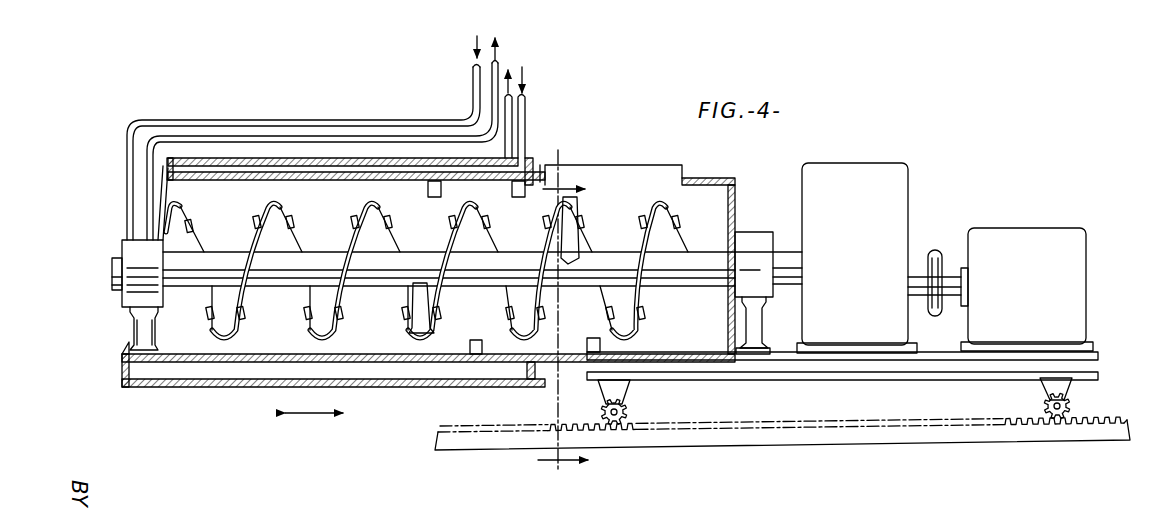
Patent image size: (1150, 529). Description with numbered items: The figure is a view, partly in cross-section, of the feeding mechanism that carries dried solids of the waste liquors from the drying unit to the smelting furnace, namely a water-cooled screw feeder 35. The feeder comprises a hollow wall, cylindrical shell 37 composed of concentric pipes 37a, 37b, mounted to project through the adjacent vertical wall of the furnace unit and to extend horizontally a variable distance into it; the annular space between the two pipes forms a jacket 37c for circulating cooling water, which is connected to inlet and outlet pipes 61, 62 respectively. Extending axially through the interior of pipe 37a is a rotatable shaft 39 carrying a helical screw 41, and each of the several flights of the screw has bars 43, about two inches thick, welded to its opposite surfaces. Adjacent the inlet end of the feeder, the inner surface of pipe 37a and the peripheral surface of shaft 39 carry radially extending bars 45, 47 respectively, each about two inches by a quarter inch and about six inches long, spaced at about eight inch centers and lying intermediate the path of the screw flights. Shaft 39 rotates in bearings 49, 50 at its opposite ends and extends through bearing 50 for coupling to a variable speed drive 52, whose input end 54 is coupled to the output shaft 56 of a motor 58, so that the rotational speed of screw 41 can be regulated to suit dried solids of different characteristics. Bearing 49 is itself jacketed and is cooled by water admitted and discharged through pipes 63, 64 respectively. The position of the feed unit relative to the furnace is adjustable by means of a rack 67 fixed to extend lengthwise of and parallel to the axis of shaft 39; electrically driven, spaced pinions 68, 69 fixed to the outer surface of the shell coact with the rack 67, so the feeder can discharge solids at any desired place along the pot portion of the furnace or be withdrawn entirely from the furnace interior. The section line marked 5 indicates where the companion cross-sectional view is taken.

The section line 5- 5 is at (563, 315).
The water-cooled screw feeder 35 is at (125, 313).
The hollow wall cylindrical shell 37 is at (258, 366).
The inner pipe 37a is at (338, 172).
The outer pipe 37b is at (295, 158).
The jacket 37c is at (178, 167).
The rotatable shaft 39 is at (215, 265).
The helical screw 41 is at (652, 226).
The bars 43 is at (292, 222).
The radially extending bars 45 is at (430, 196).
The radially extending bars 47 is at (572, 212).
The bearing 49 is at (122, 241).
The bearing 50 is at (758, 240).
The variable speed drive 52 is at (877, 170).
The input end 54 is at (908, 283).
The output shaft 56 is at (946, 272).
The motor 58 is at (1000, 240).
The inlet pipe 61 is at (512, 110).
The outlet pipe 62 is at (520, 100).
The pipe 63 is at (473, 70).
The pipe 64 is at (498, 60).
The rack 67 is at (892, 432).
The pinion 68 is at (630, 409).
The pinion 69 is at (1075, 402).